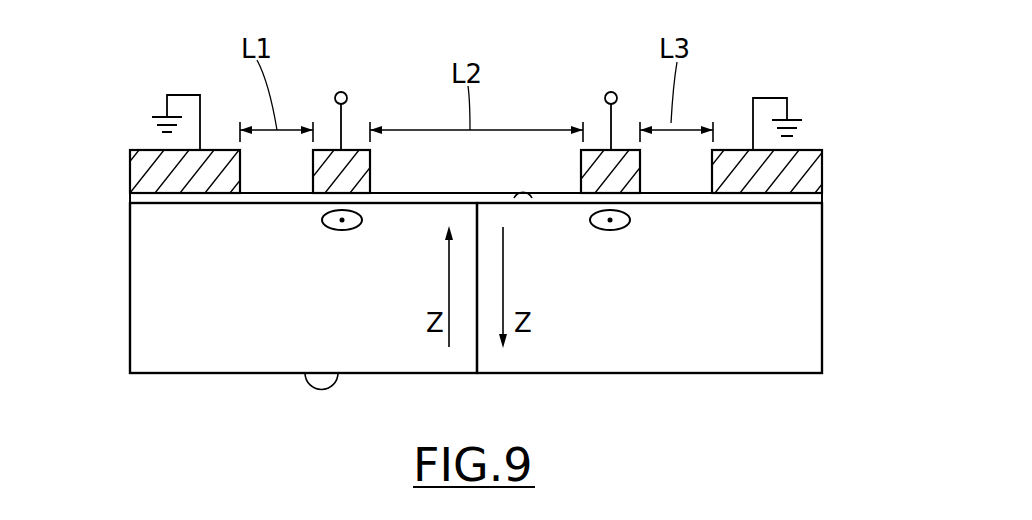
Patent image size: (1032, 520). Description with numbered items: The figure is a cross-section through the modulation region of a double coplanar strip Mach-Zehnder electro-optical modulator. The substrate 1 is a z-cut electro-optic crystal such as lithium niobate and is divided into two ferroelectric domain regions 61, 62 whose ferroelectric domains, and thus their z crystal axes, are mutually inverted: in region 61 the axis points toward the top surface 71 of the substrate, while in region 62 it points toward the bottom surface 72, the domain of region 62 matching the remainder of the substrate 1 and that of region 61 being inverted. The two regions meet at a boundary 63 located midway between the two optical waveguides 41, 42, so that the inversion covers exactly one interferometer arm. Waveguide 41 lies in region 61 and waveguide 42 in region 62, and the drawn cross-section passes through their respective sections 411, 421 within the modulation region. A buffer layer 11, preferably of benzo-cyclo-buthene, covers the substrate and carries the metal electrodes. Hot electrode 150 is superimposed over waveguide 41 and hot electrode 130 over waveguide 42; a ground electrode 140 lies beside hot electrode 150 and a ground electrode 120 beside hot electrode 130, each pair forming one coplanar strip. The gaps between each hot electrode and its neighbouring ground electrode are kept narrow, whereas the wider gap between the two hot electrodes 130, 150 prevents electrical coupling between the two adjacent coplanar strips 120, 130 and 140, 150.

The substrate 1 is at (168, 380).
The buffer layer 11 is at (132, 198).
The optical waveguide 41 is at (316, 222).
The section of waveguide 411 is at (350, 230).
The optical waveguide 42 is at (638, 222).
The section of waveguide 421 is at (608, 229).
The ferroelectric domain region 61 is at (186, 338).
The ferroelectric domain region 62 is at (782, 354).
The boundary 63 is at (477, 358).
The top surface 71 is at (523, 200).
The bottom surface 72 is at (307, 373).
The ground electrode 120 is at (802, 175).
The hot electrode 130 is at (597, 163).
The ground electrode 140 is at (143, 175).
The hot electrode 150 is at (357, 157).